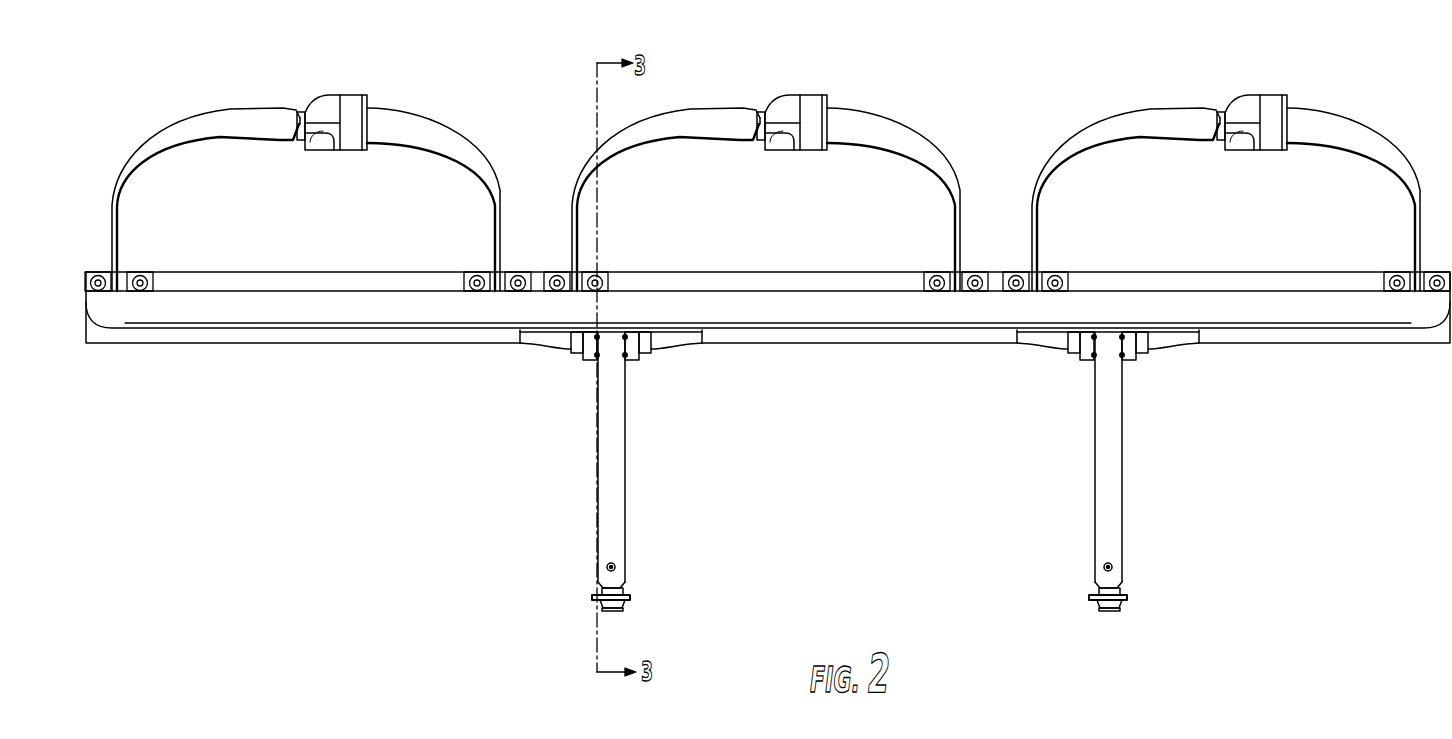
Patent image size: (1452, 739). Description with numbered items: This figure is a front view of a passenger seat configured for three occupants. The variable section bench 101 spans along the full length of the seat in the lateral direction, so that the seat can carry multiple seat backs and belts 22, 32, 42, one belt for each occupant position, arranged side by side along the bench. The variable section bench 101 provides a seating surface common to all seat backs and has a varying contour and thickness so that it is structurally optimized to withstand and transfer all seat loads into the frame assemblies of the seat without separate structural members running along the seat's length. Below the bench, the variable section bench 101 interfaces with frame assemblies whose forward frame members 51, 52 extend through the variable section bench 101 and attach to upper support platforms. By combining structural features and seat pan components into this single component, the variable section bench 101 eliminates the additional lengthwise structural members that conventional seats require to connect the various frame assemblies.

The belt 22 is at (223, 127).
The belt 32 is at (863, 130).
The belt 42 is at (1133, 128).
The variable section bench 101 is at (225, 307).
The forward frame member 51 is at (617, 470).
The forward frame member 52 is at (1108, 470).